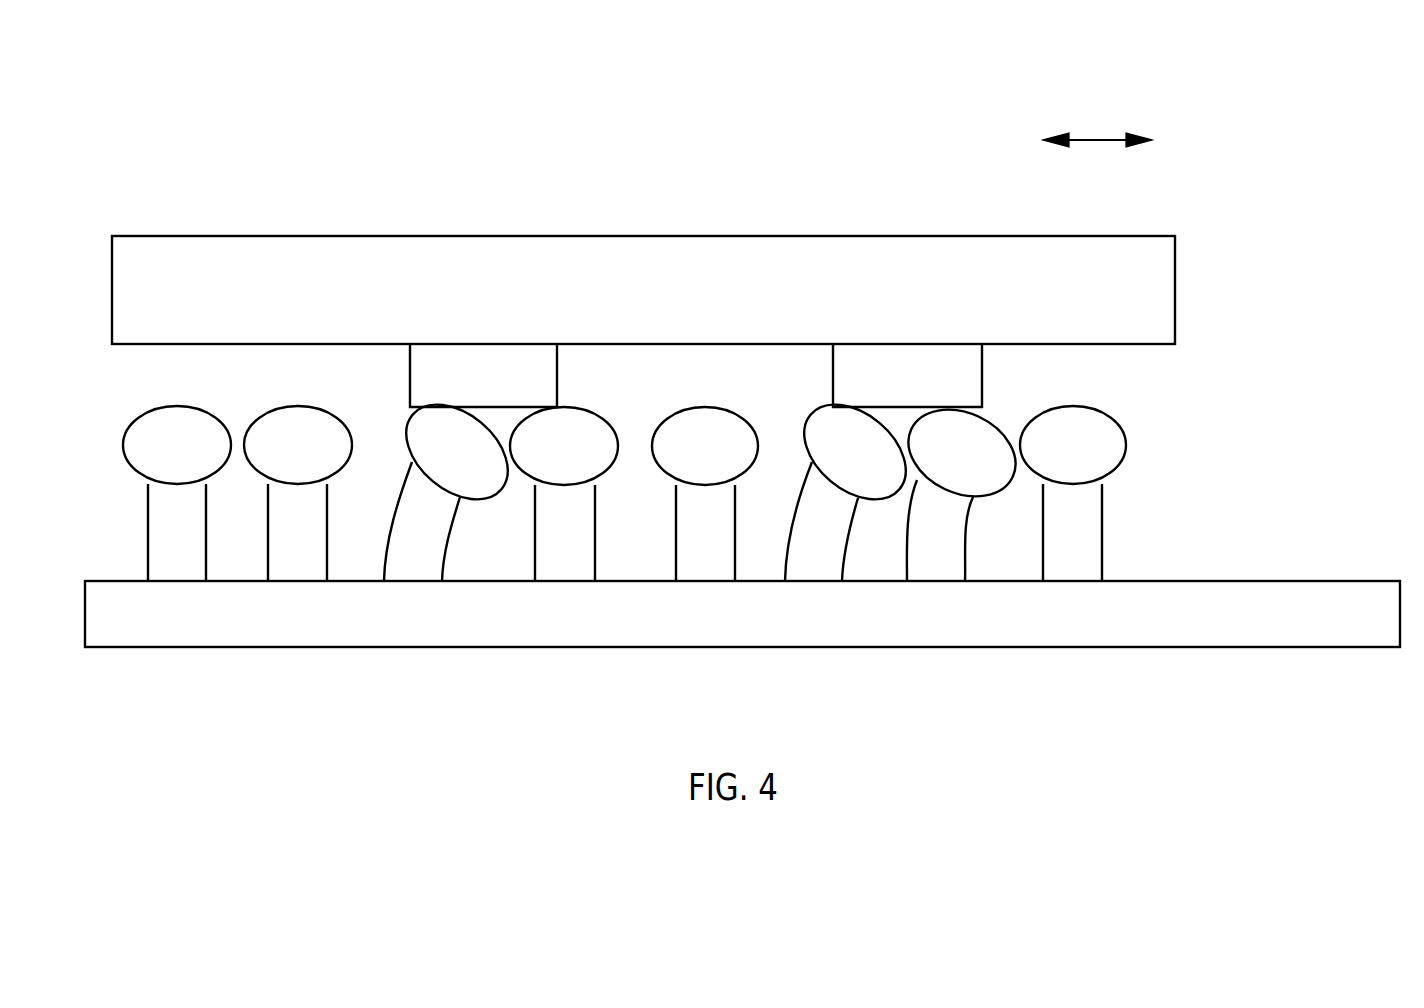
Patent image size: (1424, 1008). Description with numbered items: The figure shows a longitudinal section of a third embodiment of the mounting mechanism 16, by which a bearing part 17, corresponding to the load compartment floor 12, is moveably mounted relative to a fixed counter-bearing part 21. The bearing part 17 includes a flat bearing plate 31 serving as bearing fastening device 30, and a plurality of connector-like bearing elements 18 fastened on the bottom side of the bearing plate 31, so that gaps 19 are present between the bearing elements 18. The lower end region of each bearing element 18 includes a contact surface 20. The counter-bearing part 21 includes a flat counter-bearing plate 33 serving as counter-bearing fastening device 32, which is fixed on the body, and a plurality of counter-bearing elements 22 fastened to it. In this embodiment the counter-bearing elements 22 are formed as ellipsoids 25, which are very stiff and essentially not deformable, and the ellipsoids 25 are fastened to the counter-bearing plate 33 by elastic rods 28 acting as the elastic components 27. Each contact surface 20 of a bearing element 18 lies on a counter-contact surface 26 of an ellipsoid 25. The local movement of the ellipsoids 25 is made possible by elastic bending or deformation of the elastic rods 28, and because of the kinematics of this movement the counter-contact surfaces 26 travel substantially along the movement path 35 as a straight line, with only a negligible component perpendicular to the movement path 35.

The load compartment floor 12 is at (196, 253).
The mounting mechanism 16 is at (950, 82).
The bearing part 17 is at (696, 293).
The bearing elements 18 is at (485, 365).
The gaps 19 is at (340, 357).
The contact surface 20 is at (499, 408).
The counter-bearing part 21 is at (742, 558).
The counter-bearing elements 22 is at (689, 558).
The ellipsoids 25 is at (210, 456).
The counter-contact surface 26 is at (177, 407).
The elastic components 27 is at (689, 596).
The elastic rods 28 is at (162, 570).
The bearing fastening device 30 is at (608, 218).
The bearing plate 31 is at (607, 257).
The counter-bearing fastening device 32 is at (742, 656).
The counter-bearing plate 33 is at (1048, 635).
The movement path 35 is at (1098, 138).